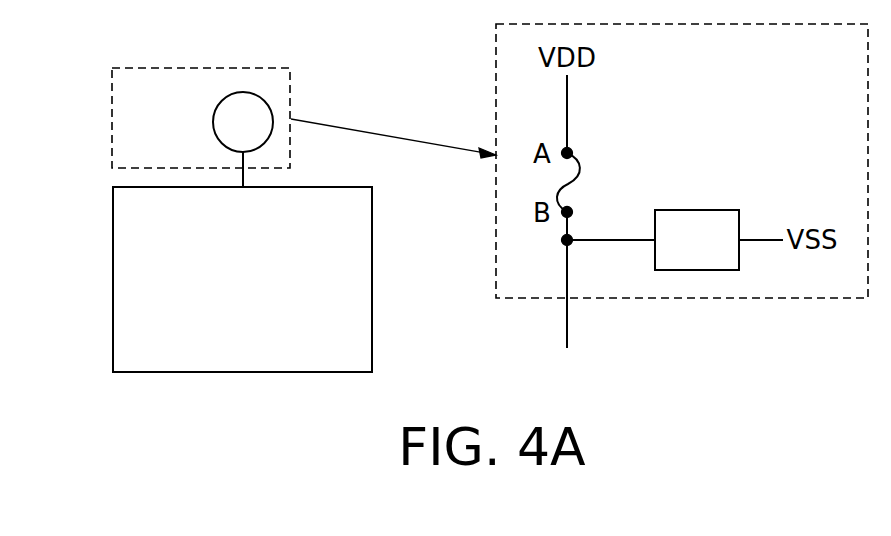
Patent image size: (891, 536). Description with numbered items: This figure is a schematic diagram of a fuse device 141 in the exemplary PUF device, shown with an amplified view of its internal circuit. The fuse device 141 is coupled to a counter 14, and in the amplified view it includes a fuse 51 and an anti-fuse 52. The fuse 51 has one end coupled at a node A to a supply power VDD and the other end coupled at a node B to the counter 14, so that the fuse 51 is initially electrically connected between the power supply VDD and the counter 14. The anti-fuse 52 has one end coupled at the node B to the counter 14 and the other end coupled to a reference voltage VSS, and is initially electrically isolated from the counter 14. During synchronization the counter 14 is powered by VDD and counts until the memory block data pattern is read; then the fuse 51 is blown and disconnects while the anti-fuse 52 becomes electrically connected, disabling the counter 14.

The counter 14 is at (112, 279).
The fuse device 141 is at (213, 122).
The fuse 51 is at (593, 181).
The anti-fuse 52 is at (697, 240).